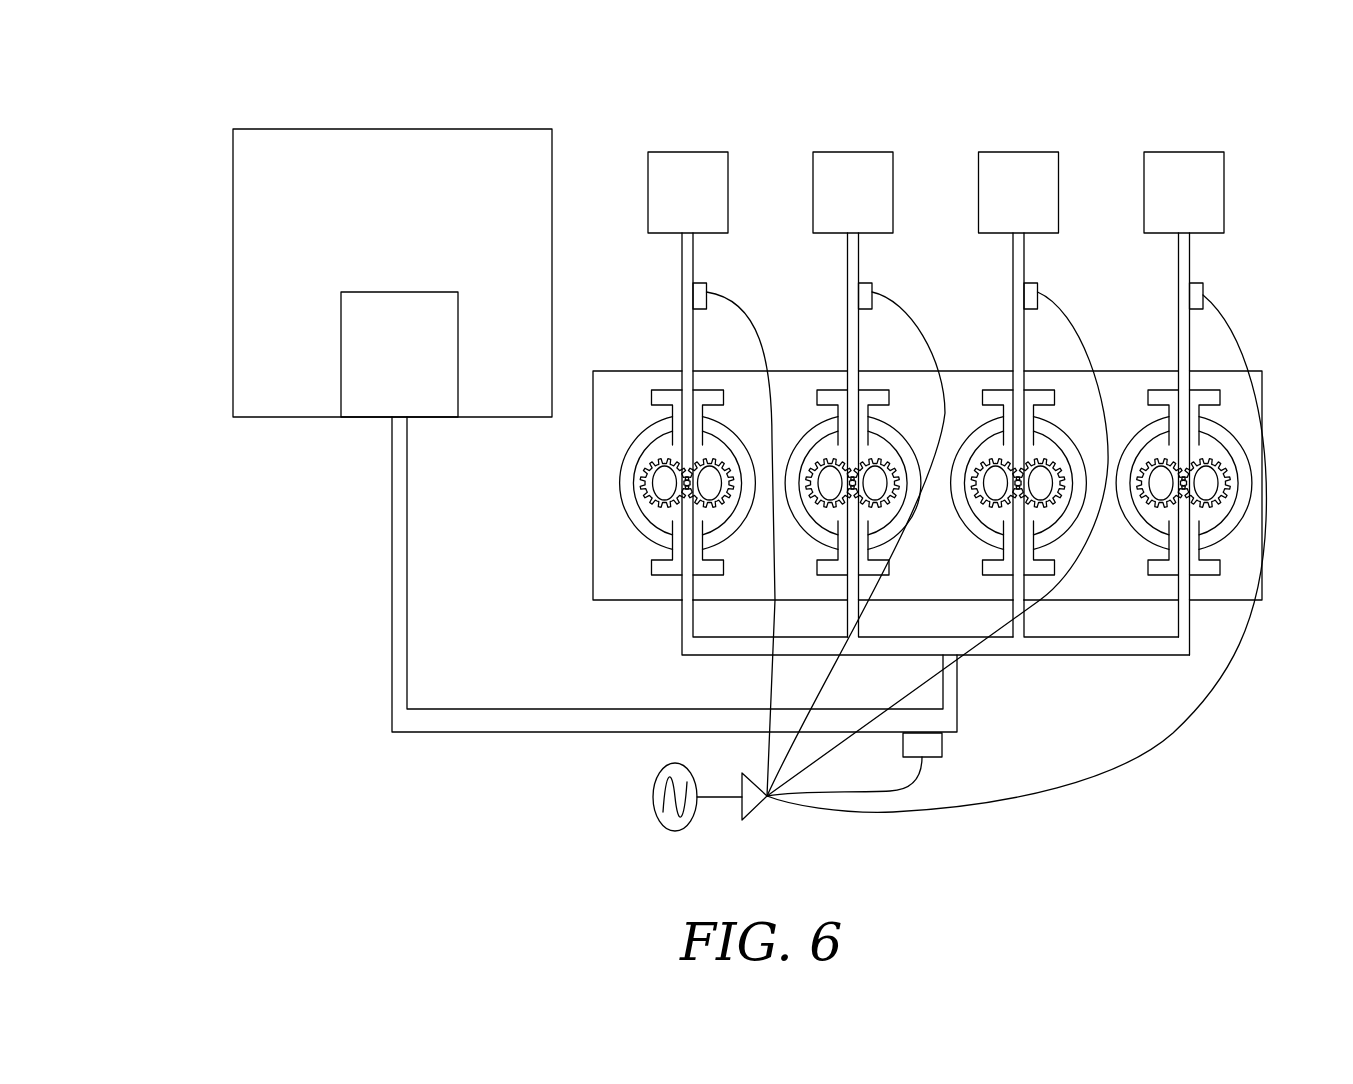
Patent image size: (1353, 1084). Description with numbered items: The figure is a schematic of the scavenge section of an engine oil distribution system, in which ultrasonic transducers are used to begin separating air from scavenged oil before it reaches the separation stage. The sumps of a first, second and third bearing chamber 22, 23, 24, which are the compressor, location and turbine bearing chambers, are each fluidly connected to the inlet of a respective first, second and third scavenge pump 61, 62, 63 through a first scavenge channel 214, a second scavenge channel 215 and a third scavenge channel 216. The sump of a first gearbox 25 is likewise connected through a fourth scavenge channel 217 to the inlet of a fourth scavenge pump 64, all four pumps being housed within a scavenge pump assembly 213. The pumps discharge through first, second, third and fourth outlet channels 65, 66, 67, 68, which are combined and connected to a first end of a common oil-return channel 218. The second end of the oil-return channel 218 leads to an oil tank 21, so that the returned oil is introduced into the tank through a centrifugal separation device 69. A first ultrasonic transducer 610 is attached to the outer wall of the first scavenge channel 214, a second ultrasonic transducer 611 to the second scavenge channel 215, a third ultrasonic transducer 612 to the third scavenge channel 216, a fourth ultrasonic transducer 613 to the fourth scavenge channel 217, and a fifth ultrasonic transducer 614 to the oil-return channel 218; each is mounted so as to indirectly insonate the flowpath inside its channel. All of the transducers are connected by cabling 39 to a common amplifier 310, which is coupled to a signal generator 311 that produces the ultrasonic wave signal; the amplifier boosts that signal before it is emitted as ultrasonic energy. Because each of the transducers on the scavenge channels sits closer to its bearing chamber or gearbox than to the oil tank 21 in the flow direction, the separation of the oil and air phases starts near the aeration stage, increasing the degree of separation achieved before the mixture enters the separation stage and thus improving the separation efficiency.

The oil tank 21 is at (487, 129).
The first bearing chamber 22 is at (688, 152).
The second bearing chamber 23 is at (853, 152).
The third bearing chamber 24 is at (1019, 152).
The first gearbox 25 is at (1184, 152).
The cabling 39 is at (827, 674).
The first scavenge pump 61 is at (614, 513).
The second scavenge pump 62 is at (805, 420).
The third scavenge pump 63 is at (970, 420).
The fourth scavenge pump 64 is at (1135, 420).
The first outlet channel 65 is at (682, 620).
The second outlet channel 66 is at (860, 613).
The third outlet channel 67 is at (1026, 614).
The fourth outlet channel 68 is at (1140, 655).
The centrifugal separation device 69 is at (392, 292).
The scavenge pump assembly 213 is at (593, 465).
The first scavenge channel 214 is at (681, 273).
The second scavenge channel 215 is at (847, 245).
The third scavenge channel 216 is at (1013, 245).
The fourth scavenge channel 217 is at (1178, 243).
The oil-return channel 218 is at (463, 732).
The amplifier 310 is at (767, 802).
The signal generator 311 is at (653, 797).
The first ultrasonic transducer 610 is at (707, 287).
The second ultrasonic transducer 611 is at (872, 287).
The third ultrasonic transducer 612 is at (1038, 289).
The fourth ultrasonic transducer 613 is at (1203, 289).
The fifth ultrasonic transducer 614 is at (943, 745).